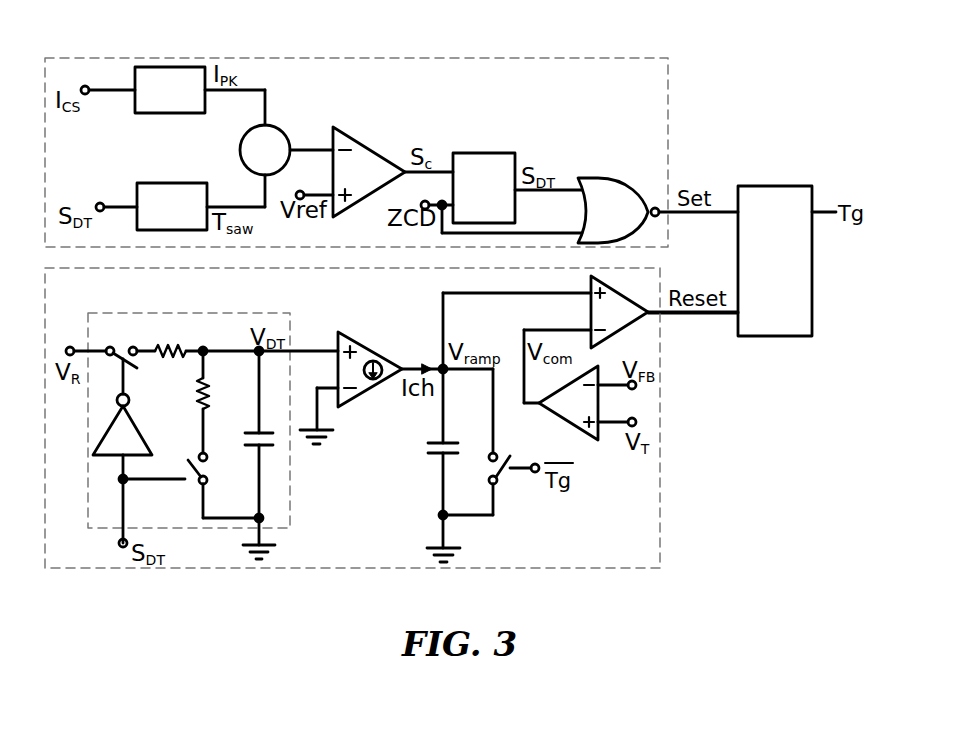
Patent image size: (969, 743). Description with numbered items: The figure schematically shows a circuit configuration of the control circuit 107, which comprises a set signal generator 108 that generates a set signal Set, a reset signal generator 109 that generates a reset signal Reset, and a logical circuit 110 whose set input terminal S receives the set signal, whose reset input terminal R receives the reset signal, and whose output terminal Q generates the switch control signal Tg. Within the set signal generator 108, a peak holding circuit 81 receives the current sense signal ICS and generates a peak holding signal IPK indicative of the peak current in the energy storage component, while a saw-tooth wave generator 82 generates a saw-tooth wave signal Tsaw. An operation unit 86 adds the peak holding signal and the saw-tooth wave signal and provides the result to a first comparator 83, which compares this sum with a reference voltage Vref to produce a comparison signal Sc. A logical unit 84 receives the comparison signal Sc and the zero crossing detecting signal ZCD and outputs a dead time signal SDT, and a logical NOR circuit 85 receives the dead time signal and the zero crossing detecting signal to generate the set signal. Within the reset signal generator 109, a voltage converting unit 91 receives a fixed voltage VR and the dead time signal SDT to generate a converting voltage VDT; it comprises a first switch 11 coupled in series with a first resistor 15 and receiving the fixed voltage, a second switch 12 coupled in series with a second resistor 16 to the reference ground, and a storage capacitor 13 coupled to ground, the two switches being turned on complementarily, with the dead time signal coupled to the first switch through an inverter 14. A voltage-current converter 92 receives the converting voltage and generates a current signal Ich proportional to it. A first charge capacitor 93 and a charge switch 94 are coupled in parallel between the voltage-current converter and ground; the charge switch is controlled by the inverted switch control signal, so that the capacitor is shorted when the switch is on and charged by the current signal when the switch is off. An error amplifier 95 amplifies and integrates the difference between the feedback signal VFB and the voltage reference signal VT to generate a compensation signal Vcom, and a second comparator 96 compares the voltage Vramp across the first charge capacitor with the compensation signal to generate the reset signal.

The first switch 11 is at (126, 348).
The second switch 12 is at (208, 462).
The storage capacitor 13 is at (250, 438).
The inverter 14 is at (122, 468).
The first resistor 15 is at (171, 346).
The second resistor 16 is at (196, 390).
The peak holding circuit 81 is at (170, 90).
The saw-tooth wave generator 82 is at (172, 206).
The first comparator 83 is at (369, 172).
The logical unit 84 is at (484, 188).
The logical NOR circuit 85 is at (618, 210).
The operation unit 86 is at (286, 133).
The voltage converting unit 91 is at (120, 520).
The voltage-current converter 92 is at (369, 395).
The first charge capacitor 93 is at (425, 453).
The charge switch 94 is at (485, 467).
The error amplifier 95 is at (568, 403).
The second comparator 96 is at (619, 312).
The control circuit 107 is at (821, 91).
The set signal generator 108 is at (646, 92).
The reset signal generator 109 is at (646, 553).
The logical circuit 110 is at (775, 261).